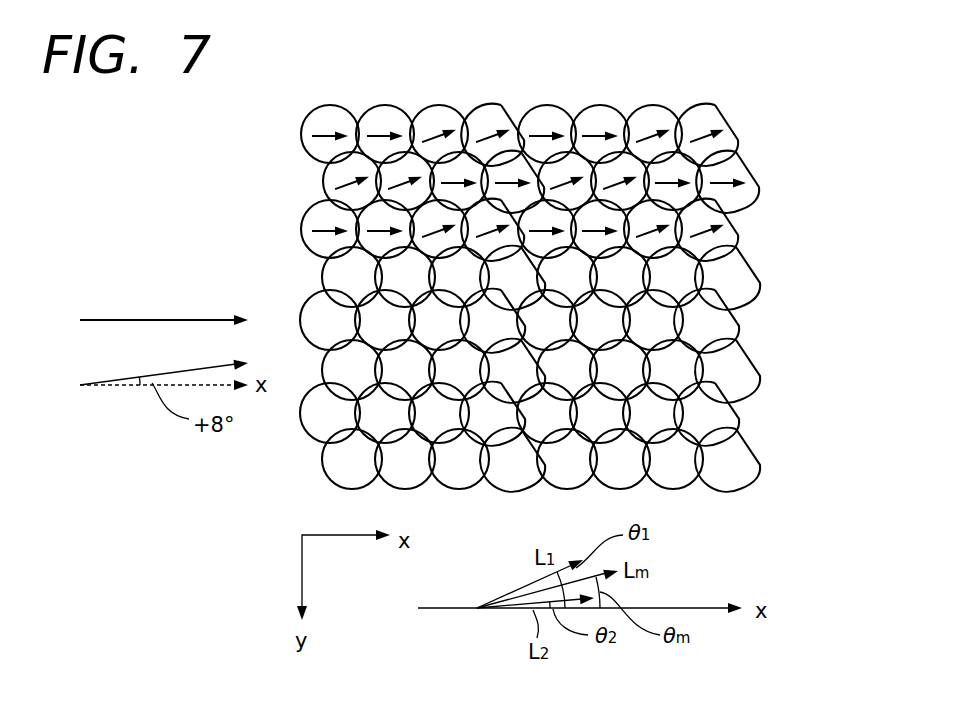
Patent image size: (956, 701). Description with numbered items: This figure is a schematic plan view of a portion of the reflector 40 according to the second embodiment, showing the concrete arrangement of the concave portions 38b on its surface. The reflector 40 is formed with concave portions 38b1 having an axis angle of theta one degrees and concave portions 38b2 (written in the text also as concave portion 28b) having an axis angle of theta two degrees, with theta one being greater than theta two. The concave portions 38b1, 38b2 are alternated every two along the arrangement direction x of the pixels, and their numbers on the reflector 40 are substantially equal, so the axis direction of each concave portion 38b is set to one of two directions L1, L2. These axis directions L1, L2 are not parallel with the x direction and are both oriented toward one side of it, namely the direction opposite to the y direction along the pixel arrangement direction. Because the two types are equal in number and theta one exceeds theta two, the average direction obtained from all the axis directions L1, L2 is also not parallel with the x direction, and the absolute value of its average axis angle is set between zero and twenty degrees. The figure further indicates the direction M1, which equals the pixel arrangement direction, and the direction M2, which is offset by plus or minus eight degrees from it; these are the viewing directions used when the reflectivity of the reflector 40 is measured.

The reflector 40 is at (792, 155).
The concave portion 38b is at (748, 272).
The concave portion 38b1 is at (477, 110).
The concave portion 38b2 is at (365, 108).
The concave portion 28b is at (301, 222).
The axis direction L1 is at (479, 133).
The axis direction L2 is at (375, 133).
The viewing direction M1 is at (180, 323).
The viewing direction M2 is at (180, 369).